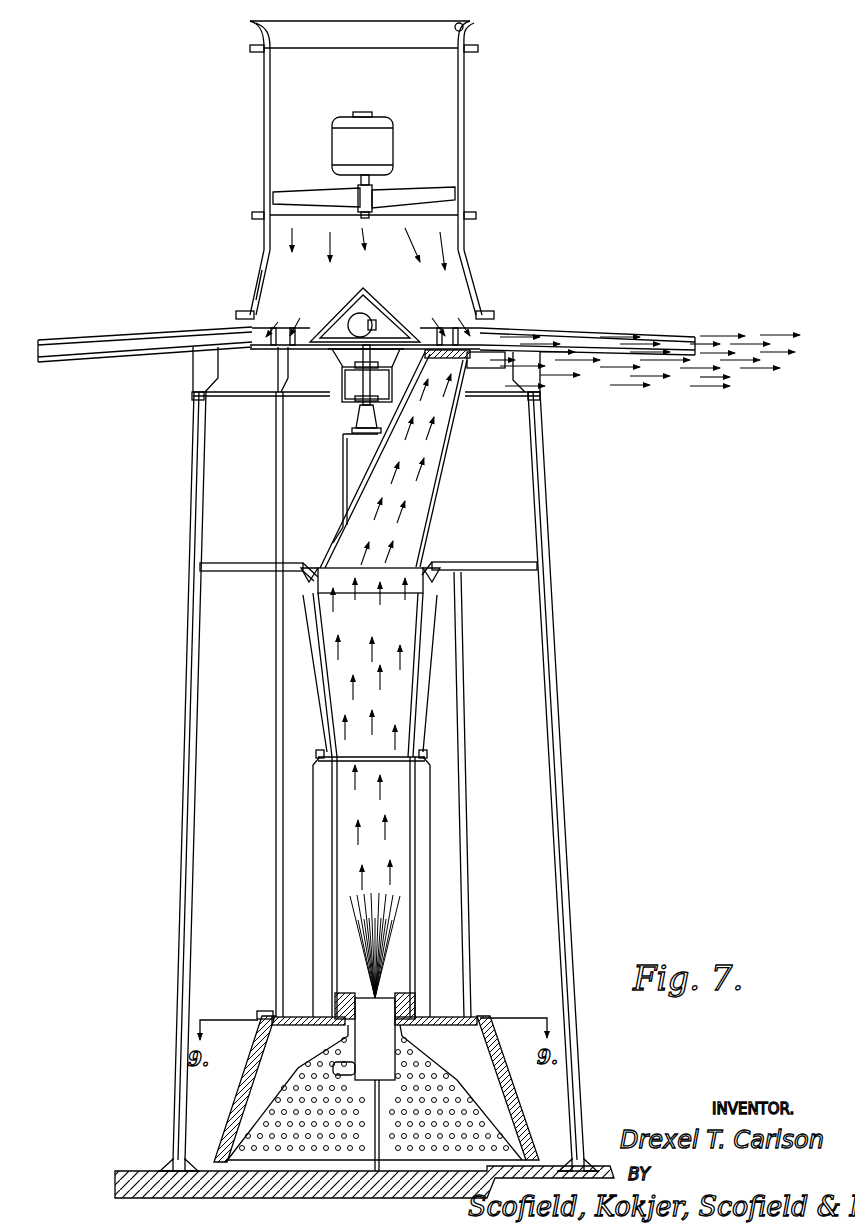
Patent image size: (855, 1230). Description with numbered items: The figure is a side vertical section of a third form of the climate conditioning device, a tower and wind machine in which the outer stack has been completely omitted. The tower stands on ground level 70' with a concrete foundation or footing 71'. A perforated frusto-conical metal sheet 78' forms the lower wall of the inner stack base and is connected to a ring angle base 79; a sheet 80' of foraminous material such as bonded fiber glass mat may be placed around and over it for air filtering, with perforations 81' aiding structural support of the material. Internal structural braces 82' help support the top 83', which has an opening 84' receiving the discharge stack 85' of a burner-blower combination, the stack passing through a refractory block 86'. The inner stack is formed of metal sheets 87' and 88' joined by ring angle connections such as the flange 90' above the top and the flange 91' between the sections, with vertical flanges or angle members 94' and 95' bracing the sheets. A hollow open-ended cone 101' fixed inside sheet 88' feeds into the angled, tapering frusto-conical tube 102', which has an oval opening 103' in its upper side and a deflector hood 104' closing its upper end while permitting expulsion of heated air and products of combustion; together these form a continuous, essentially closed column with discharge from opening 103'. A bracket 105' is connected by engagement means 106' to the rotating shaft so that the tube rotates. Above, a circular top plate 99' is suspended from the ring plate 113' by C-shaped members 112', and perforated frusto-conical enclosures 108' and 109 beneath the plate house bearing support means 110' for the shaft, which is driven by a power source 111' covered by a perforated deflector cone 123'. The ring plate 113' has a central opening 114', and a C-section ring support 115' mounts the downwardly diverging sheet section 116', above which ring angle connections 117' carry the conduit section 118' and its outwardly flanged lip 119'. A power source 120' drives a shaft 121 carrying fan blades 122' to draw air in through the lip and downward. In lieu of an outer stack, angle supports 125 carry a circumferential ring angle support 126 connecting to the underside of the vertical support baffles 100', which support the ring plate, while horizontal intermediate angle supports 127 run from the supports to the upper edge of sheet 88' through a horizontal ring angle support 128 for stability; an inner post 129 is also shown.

The ground level 70' is at (364, 1165).
The concrete foundation or footing 71' is at (376, 1099).
The frusto-conical perforated metal sheet 78' is at (287, 1093).
The ring angle base 79 is at (222, 1198).
The sheet of foraminous material 80' is at (255, 1001).
The perforations 81' is at (244, 1089).
The internal structural braces 82' is at (392, 1067).
The top 83' is at (469, 1073).
The opening 84' is at (431, 992).
The discharge stack 85' is at (380, 986).
The refractory block 86' is at (322, 982).
The inner stack metal sheet 87' is at (420, 887).
The inner stack metal sheet 88' is at (407, 675).
The ring angle flange 90' is at (374, 1008).
The ring angle flange 91' is at (408, 743).
The vertical flange or angle member 94' is at (411, 887).
The vertical flange or angle member 95' is at (402, 673).
The circular top cap or plate 99' is at (465, 316).
The vertical vanes or support baffles 100' is at (374, 386).
The hollow open-ended cone 101' is at (370, 594).
The angled tapering frusto-conical tube 102' is at (375, 460).
The oval opening 103' is at (465, 463).
The deflector hood 104' is at (445, 373).
The bracket 105' is at (323, 488).
The engagement means 106' is at (339, 442).
The frusto-conical sheet enclosure 108' is at (338, 397).
The frusto-conical sheet enclosure 109 is at (336, 352).
The bearing support means 110' is at (348, 389).
The power source 111' is at (394, 310).
The C-shaped angle support members 112' is at (366, 331).
The ring plate or sheet 113' is at (248, 316).
The central opening 114' is at (280, 316).
The C-section angle ring support member 115' is at (238, 299).
The lower downwardly diverging sheet section 116' is at (282, 280).
The ring angle supports and connections 117' is at (349, 196).
The conduit section 118' is at (366, 168).
The outwardly flanged lip member 119' is at (391, 29).
The power source 120' is at (389, 141).
The shaft 121 is at (365, 218).
The fan blades 122' is at (364, 180).
The deflector cone 123' is at (365, 300).
The angle supports 125 is at (560, 733).
The circumferential ring angle support 126 is at (200, 400).
The intermediate height angle supports 127 is at (222, 564).
The horizontal ring angle support 128 is at (442, 576).
The inner post 129 is at (459, 618).